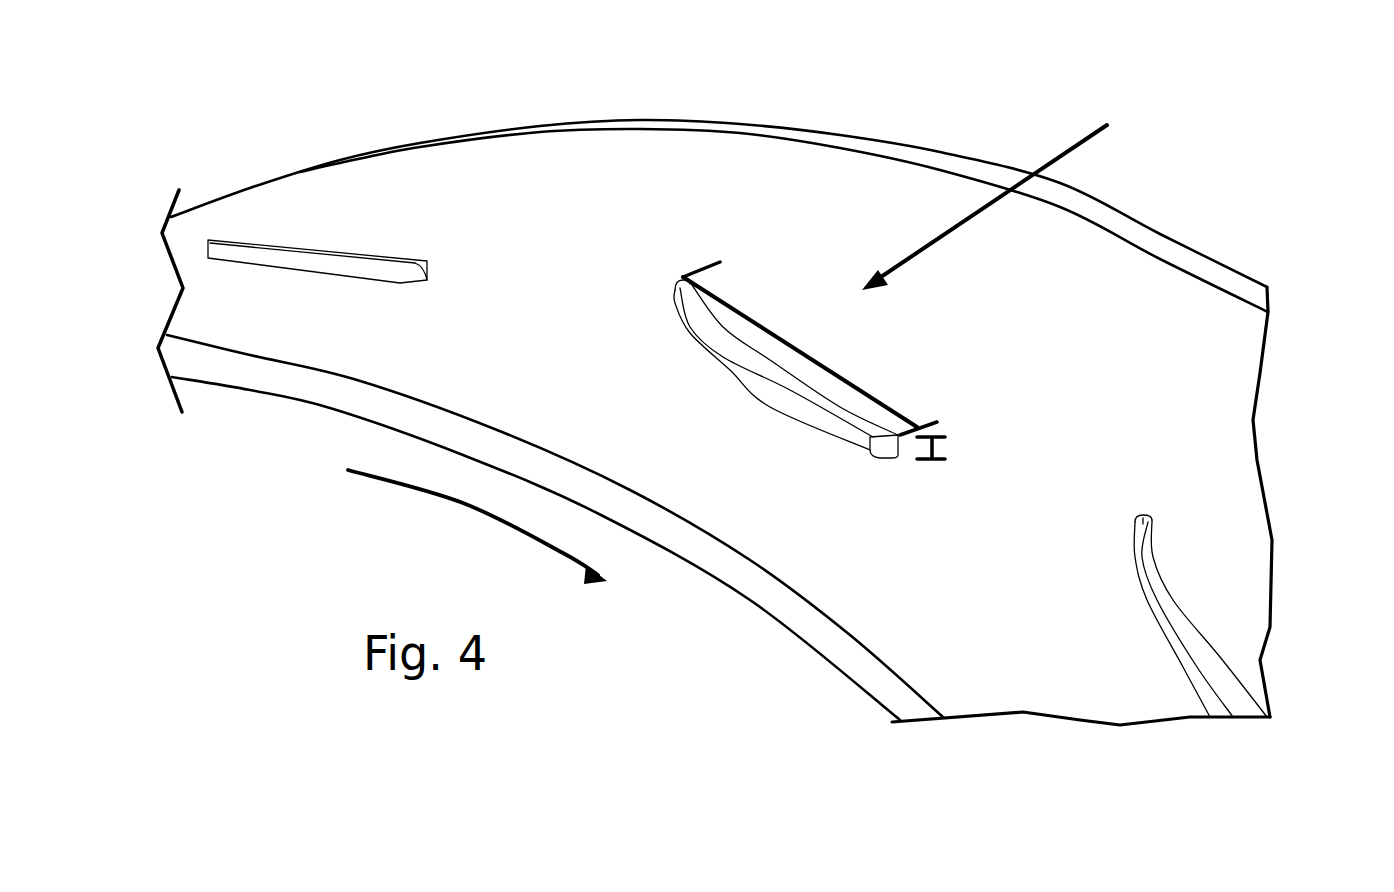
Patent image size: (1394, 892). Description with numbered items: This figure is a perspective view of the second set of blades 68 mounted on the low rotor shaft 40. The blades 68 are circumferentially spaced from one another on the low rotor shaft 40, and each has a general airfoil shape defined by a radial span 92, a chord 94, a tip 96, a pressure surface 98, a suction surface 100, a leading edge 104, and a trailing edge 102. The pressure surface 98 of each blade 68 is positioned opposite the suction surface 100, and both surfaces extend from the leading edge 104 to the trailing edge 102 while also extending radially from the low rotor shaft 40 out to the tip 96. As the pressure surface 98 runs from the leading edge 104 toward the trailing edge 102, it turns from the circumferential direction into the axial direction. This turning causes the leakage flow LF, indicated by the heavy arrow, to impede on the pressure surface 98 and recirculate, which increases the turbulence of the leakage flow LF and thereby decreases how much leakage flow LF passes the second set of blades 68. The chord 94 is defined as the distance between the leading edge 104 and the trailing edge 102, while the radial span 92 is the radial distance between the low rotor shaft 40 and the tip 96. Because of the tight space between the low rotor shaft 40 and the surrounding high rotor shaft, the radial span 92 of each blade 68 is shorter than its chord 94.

The low rotor shaft 40 is at (480, 185).
The second set of blades 68 is at (728, 437).
The radial span 92 is at (943, 445).
The chord 94 is at (823, 357).
The tip 96 is at (868, 418).
The pressure surface 98 is at (765, 360).
The suction surface 100 is at (780, 393).
The trailing edge 102 is at (680, 283).
The leading edge 104 is at (427, 265).
The leakage flow LF is at (1060, 157).